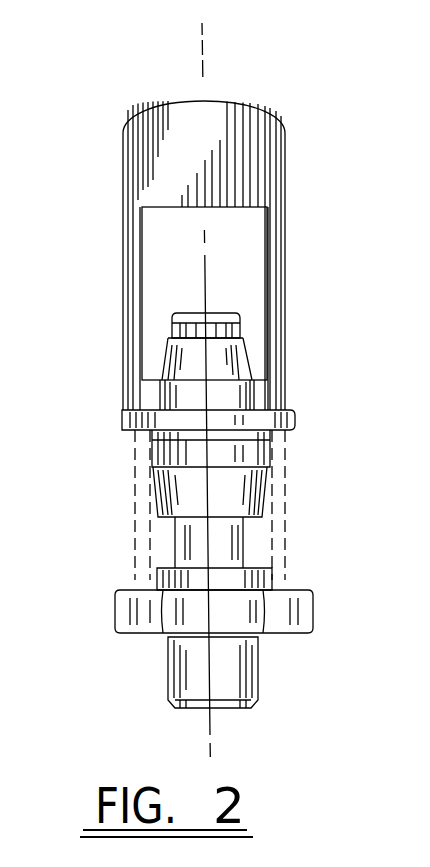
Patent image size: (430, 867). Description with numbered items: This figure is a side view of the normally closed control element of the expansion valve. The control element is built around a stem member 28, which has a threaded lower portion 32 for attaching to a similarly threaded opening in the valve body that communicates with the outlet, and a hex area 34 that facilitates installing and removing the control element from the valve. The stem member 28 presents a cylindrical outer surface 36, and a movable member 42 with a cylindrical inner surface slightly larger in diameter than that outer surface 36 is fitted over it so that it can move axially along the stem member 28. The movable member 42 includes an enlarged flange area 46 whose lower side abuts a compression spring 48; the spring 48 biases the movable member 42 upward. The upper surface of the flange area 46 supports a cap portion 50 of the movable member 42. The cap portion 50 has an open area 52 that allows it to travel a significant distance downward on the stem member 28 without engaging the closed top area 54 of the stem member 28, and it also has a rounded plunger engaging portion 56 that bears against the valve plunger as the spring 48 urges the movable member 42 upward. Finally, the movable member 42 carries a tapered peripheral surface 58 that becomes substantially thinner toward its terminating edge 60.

The stem member 28 is at (258, 554).
The threaded lower portion 32 is at (257, 685).
The hex area 34 is at (288, 613).
The cylindrical outer surface 36 is at (245, 533).
The movable member 42 is at (240, 457).
The flange area 46 is at (297, 420).
The compression spring 48 is at (277, 498).
The cap portion 50 is at (286, 322).
The open area 52 is at (248, 265).
The closed top area 54 is at (185, 322).
The plunger engaging portion 56 is at (227, 102).
The tapered peripheral surface 58 is at (233, 363).
The terminating edge 60 is at (247, 328).